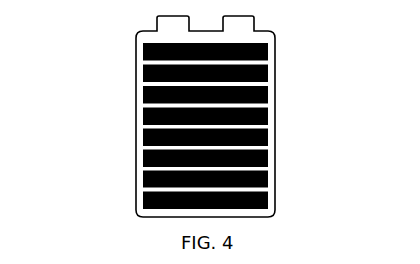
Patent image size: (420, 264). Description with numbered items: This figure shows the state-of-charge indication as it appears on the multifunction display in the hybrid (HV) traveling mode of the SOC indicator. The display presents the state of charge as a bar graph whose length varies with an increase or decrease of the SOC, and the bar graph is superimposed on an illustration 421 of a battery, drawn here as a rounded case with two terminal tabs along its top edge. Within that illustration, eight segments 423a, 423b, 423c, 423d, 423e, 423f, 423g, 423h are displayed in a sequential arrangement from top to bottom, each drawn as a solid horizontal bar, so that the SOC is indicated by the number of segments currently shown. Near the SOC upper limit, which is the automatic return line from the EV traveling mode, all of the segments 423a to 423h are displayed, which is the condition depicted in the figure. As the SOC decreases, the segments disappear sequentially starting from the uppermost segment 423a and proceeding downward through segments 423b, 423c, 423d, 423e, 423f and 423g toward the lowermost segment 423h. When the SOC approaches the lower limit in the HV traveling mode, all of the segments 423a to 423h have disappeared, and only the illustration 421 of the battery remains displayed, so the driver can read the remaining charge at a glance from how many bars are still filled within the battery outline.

The illustration of a battery 421 is at (135, 51).
The segment 423a is at (270, 52).
The segment 423b is at (270, 73).
The segment 423c is at (270, 93).
The segment 423d is at (270, 113).
The segment 423e is at (270, 135).
The segment 423f is at (270, 156).
The segment 423g is at (270, 180).
The segment 423h is at (270, 200).